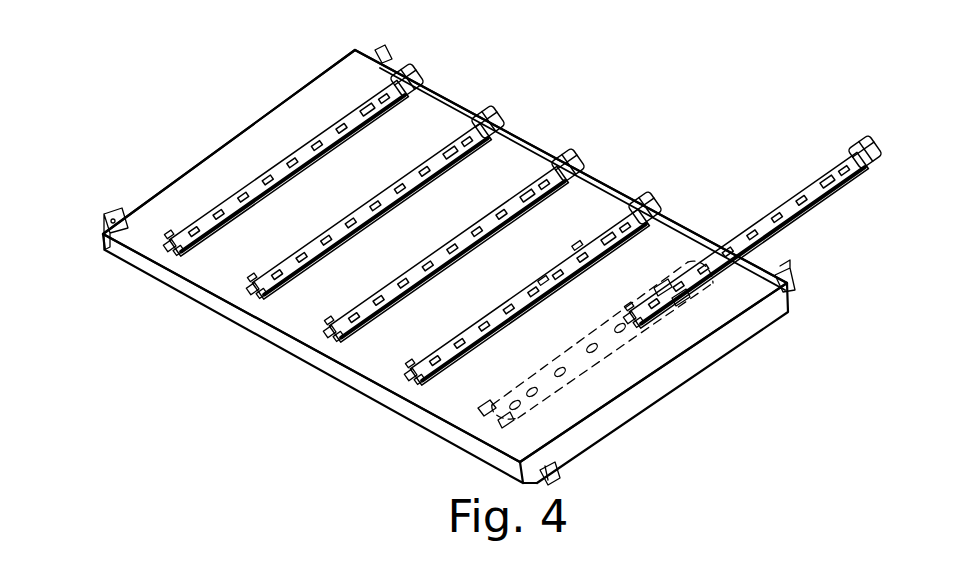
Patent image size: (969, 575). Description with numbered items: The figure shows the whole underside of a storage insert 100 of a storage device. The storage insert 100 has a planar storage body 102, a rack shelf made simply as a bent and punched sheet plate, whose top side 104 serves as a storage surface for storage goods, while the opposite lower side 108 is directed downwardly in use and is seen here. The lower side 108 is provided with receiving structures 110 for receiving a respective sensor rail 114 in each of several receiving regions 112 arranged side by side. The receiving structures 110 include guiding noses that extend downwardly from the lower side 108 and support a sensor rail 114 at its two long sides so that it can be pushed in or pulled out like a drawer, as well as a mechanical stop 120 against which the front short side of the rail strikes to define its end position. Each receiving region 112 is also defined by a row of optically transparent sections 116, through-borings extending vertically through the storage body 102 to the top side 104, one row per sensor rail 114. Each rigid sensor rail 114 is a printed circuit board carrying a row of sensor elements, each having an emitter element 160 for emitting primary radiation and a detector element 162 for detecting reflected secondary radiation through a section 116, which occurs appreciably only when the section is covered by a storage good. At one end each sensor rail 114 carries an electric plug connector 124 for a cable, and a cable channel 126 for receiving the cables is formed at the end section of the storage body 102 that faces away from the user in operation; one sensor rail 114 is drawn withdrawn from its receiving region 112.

The storage insert 100 is at (125, 176).
The storage body 102 is at (422, 118).
The top side 104 is at (264, 342).
The lower side 108 is at (250, 148).
The receiving structures 110 is at (502, 422).
The receiving regions 112 is at (578, 357).
The sensor rail 114 is at (336, 141).
The optically transparent sections 116 is at (615, 326).
The mechanical stop 120 is at (245, 292).
The electric plug connector 124 is at (640, 195).
The cable channel 126 is at (528, 95).
The emitter element 160 is at (537, 282).
The detector element 162 is at (575, 248).